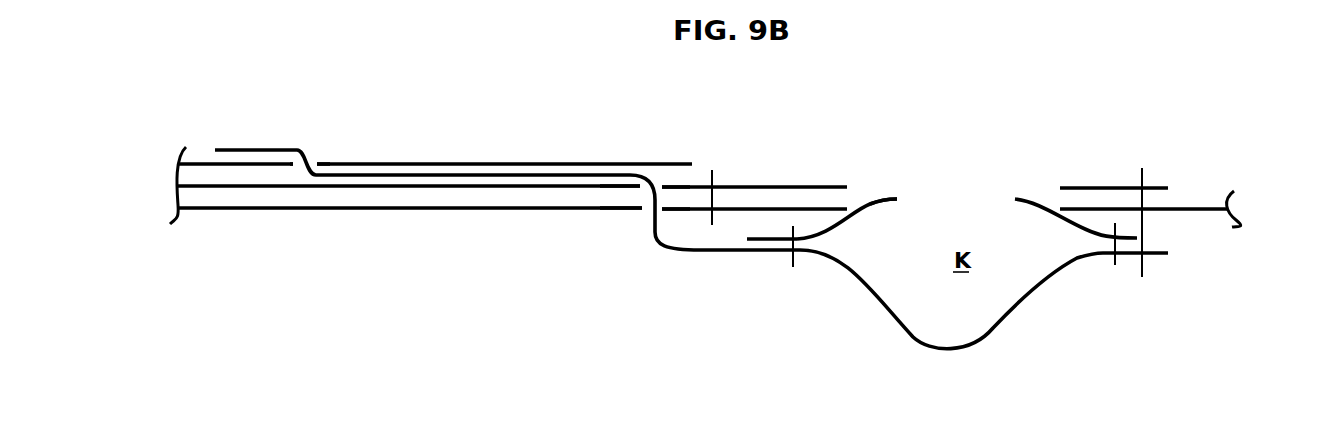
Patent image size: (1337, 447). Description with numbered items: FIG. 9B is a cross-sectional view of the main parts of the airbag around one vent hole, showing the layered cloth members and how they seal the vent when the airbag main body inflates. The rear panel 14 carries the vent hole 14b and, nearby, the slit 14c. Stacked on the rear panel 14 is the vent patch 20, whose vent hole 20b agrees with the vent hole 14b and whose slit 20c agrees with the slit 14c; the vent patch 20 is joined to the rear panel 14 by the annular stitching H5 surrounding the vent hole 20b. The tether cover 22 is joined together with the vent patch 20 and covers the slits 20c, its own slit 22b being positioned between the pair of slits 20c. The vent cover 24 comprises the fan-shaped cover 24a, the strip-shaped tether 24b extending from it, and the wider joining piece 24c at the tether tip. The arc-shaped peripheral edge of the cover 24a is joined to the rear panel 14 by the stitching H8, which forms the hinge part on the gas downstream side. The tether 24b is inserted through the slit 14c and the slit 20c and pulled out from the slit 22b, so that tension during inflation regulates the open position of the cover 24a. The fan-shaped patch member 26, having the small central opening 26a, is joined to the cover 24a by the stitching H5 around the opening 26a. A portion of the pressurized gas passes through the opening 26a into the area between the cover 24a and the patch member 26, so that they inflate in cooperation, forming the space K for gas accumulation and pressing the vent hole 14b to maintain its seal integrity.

The rear panel 14 is at (362, 206).
The vent holes 14b is at (1058, 208).
The slits 14c is at (652, 207).
The vent patch 20 is at (771, 188).
The vent holes 20b is at (863, 188).
The slits 20c is at (660, 170).
The tether cover 22 is at (530, 164).
The slit 22b is at (312, 162).
The vent covers 24 is at (1069, 276).
The cover 24a is at (863, 288).
The tether 24b is at (500, 175).
The joining piece 24c is at (248, 150).
The patch member 26 is at (1022, 197).
The opening 26a is at (932, 200).
The stitching H5 is at (790, 266).
The stitching H8 is at (1143, 170).